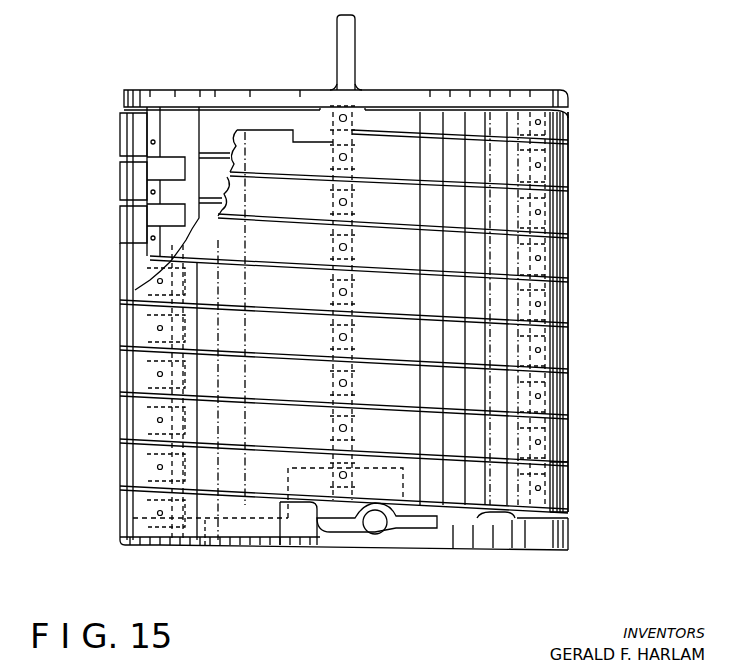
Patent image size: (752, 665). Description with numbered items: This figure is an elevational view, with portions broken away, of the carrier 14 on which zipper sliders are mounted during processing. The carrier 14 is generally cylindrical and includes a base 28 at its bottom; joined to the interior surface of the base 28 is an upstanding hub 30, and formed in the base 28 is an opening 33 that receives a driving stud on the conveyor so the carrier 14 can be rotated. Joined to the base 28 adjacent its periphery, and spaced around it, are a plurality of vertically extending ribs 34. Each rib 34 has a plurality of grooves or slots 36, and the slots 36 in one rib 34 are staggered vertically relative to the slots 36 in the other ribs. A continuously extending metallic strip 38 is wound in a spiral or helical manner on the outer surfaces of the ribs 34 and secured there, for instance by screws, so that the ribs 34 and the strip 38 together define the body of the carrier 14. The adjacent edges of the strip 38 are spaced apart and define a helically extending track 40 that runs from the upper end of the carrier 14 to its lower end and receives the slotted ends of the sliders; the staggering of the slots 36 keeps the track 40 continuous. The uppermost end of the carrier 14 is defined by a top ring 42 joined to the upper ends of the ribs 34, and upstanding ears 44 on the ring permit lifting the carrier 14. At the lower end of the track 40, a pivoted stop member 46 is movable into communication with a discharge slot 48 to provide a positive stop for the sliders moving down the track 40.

The carrier 14 is at (600, 180).
The base 28 is at (155, 546).
The hub 30 is at (393, 467).
The opening 33 is at (208, 546).
The ribs 34 is at (178, 118).
The slots 36 is at (180, 170).
The metallic strip 38 is at (569, 485).
The track 40 is at (569, 234).
The top ring 42 is at (404, 95).
The ears 44 is at (355, 49).
The stop member 46 is at (408, 529).
The discharge slot 48 is at (331, 536).